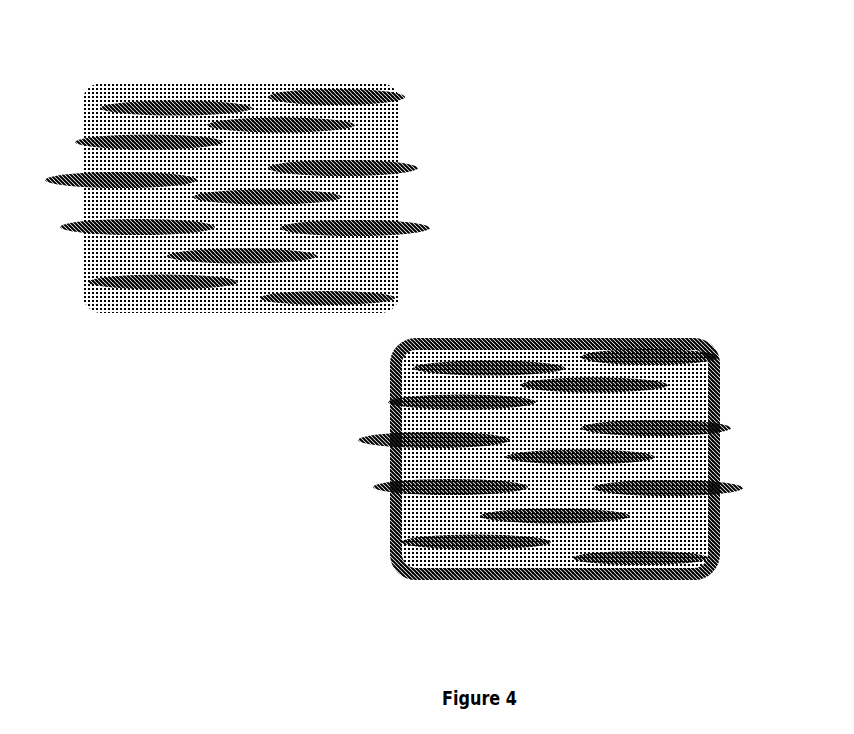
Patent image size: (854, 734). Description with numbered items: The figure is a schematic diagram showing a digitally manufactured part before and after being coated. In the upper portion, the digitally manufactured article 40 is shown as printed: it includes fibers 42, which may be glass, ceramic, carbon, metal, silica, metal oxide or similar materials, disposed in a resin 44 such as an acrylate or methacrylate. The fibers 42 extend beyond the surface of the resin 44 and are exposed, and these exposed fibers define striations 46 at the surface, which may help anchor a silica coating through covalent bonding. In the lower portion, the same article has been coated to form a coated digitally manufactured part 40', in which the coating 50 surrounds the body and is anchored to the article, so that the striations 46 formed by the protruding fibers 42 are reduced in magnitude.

The digitally manufactured article 40 is at (231, 170).
The fibers 42 is at (368, 97).
The resin 44 is at (367, 127).
The striations 46 is at (440, 229).
The coated digitally manufactured part 40' is at (569, 449).
The coating 50 is at (710, 448).